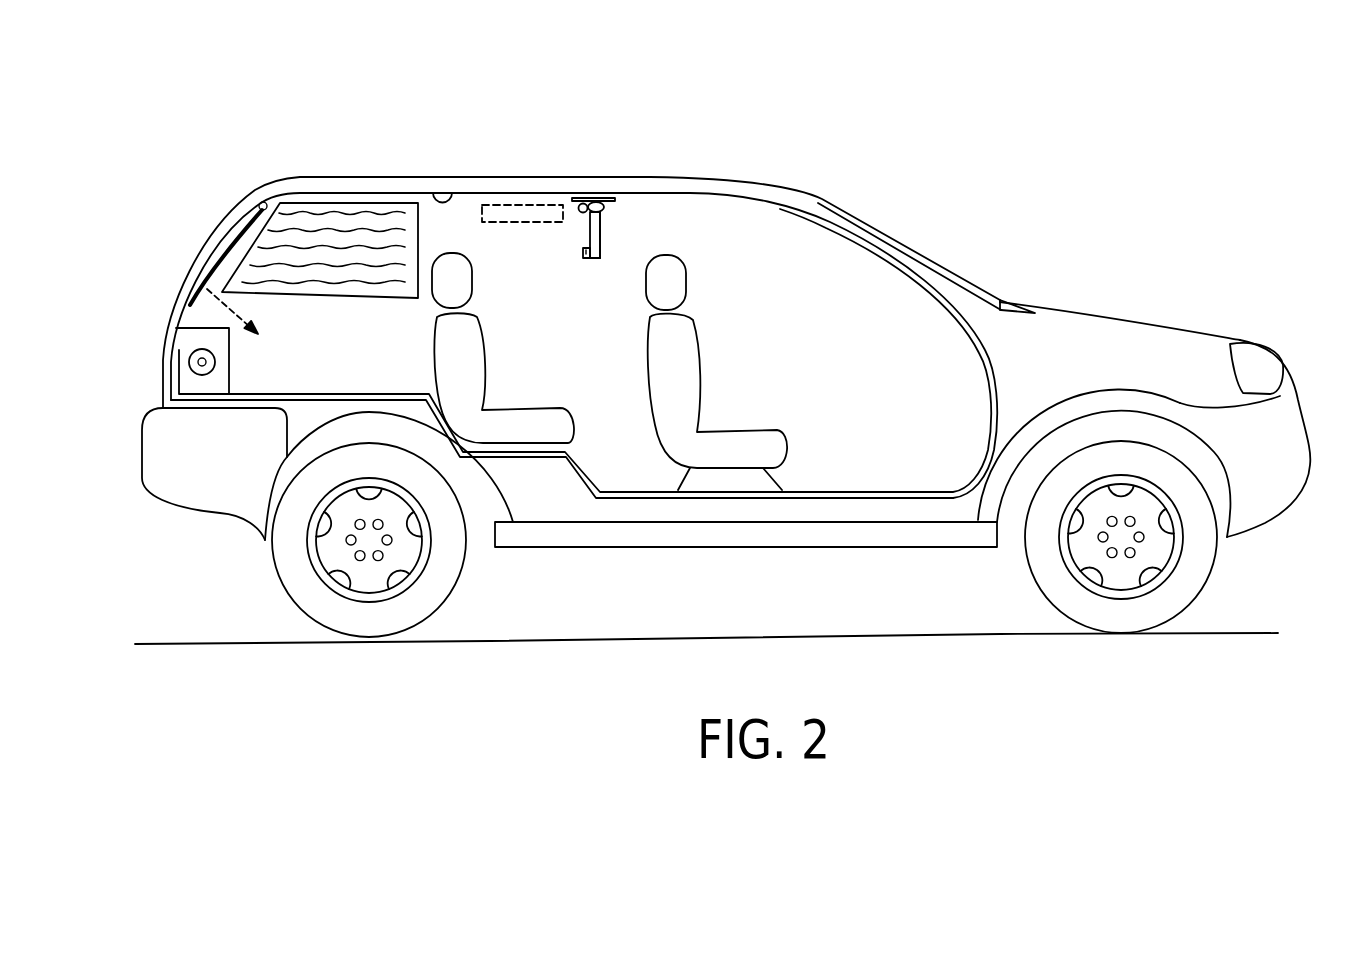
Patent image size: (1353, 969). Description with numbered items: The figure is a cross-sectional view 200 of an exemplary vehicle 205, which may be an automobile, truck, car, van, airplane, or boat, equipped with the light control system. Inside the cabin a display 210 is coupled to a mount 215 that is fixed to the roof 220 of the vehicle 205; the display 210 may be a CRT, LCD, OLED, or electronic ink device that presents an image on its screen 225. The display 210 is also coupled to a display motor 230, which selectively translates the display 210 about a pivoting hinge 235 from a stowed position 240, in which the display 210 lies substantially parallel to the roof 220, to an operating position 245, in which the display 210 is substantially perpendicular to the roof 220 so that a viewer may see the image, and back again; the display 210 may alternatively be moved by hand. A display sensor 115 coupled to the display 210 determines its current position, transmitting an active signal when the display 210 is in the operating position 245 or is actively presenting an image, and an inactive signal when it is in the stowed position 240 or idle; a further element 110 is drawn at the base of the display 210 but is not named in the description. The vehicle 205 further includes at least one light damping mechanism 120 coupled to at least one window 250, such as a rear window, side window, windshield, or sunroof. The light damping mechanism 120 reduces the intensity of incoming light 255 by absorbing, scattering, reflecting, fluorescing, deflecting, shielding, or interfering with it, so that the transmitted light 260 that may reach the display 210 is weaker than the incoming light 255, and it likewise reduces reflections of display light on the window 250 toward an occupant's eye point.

The cross-sectional view 200 is at (1105, 102).
The vehicle 205 is at (1180, 323).
The incoming light 255 is at (188, 260).
The window 250 is at (194, 283).
The light damping mechanism 120 is at (189, 361).
The transmitted light 260 is at (207, 289).
The roof 220 is at (435, 196).
The stowed position 240 is at (491, 205).
The display motor 230 is at (574, 204).
The mount 215 is at (583, 203).
The pivoting hinge 235 is at (603, 205).
The screen 225 is at (590, 230).
The display 210 is at (601, 218).
The display sensor 115 is at (601, 236).
The imaging device 110 is at (585, 260).
The operating position 245 is at (597, 259).